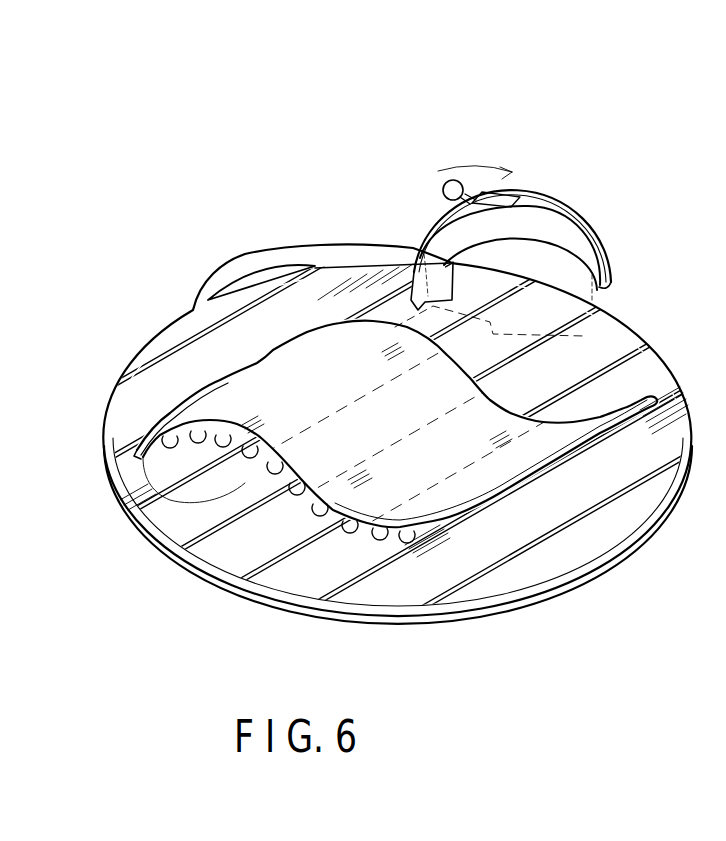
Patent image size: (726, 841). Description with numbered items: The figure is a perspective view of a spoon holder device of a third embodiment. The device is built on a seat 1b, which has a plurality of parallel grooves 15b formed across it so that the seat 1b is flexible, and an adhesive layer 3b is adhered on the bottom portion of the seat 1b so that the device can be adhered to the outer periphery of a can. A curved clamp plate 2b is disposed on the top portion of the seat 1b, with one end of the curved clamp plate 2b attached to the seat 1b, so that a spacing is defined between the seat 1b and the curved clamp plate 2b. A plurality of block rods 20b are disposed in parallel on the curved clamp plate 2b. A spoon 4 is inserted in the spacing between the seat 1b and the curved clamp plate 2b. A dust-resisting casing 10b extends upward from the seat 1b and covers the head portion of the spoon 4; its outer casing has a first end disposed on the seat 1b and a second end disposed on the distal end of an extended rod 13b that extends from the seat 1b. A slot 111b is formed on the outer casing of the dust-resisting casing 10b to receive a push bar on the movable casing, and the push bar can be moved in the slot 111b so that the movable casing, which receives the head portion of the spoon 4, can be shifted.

The seat 1b is at (517, 597).
The curved clamp plate 2b is at (522, 461).
The adhesive layer 3b is at (487, 618).
The spoon 4 is at (173, 506).
The dust-resisting casing 10b is at (575, 205).
The extended rod 13b is at (250, 260).
The parallel grooves 15b is at (424, 605).
The block rods 20b is at (333, 535).
The slot 111b is at (498, 192).